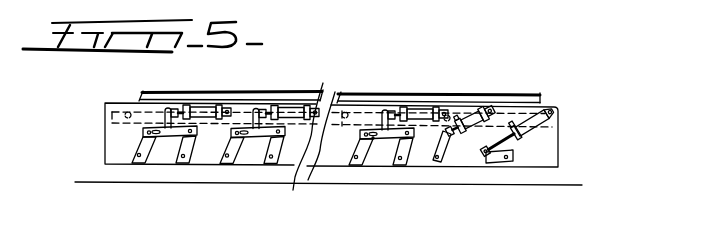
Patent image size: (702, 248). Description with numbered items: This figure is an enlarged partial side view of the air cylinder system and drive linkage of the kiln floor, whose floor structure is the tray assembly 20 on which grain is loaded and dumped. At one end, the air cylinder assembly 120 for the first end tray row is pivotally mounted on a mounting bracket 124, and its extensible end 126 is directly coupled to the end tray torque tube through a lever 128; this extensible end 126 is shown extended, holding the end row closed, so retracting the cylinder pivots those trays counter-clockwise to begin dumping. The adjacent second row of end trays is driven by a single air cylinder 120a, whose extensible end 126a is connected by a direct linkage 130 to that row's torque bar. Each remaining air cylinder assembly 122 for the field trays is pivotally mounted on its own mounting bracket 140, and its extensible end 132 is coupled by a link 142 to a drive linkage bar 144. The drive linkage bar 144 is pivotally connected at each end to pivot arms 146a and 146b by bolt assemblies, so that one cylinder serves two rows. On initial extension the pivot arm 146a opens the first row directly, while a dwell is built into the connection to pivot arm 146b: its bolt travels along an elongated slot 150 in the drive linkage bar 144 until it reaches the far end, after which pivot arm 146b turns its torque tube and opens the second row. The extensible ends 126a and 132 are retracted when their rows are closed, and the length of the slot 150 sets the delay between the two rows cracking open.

The tray assembly 20 is at (288, 85).
The air cylinder assembly 120 is at (284, 109).
The air cylinder 120a is at (478, 101).
The air cylinder assembly 122 is at (417, 109).
The mounting bracket 124 is at (557, 106).
The extensible end 126 is at (491, 161).
The extensible end 126a is at (456, 130).
The lever 128 is at (505, 161).
The direct linkage 130 is at (446, 163).
The extensible end 132 is at (386, 112).
The mounting bracket 140 is at (300, 110).
The link 142 is at (373, 139).
The drive linkage bar 144 is at (247, 136).
The pivot arm 146a is at (280, 156).
The pivot arm 146b is at (225, 157).
The elongated slot 150 is at (155, 128).